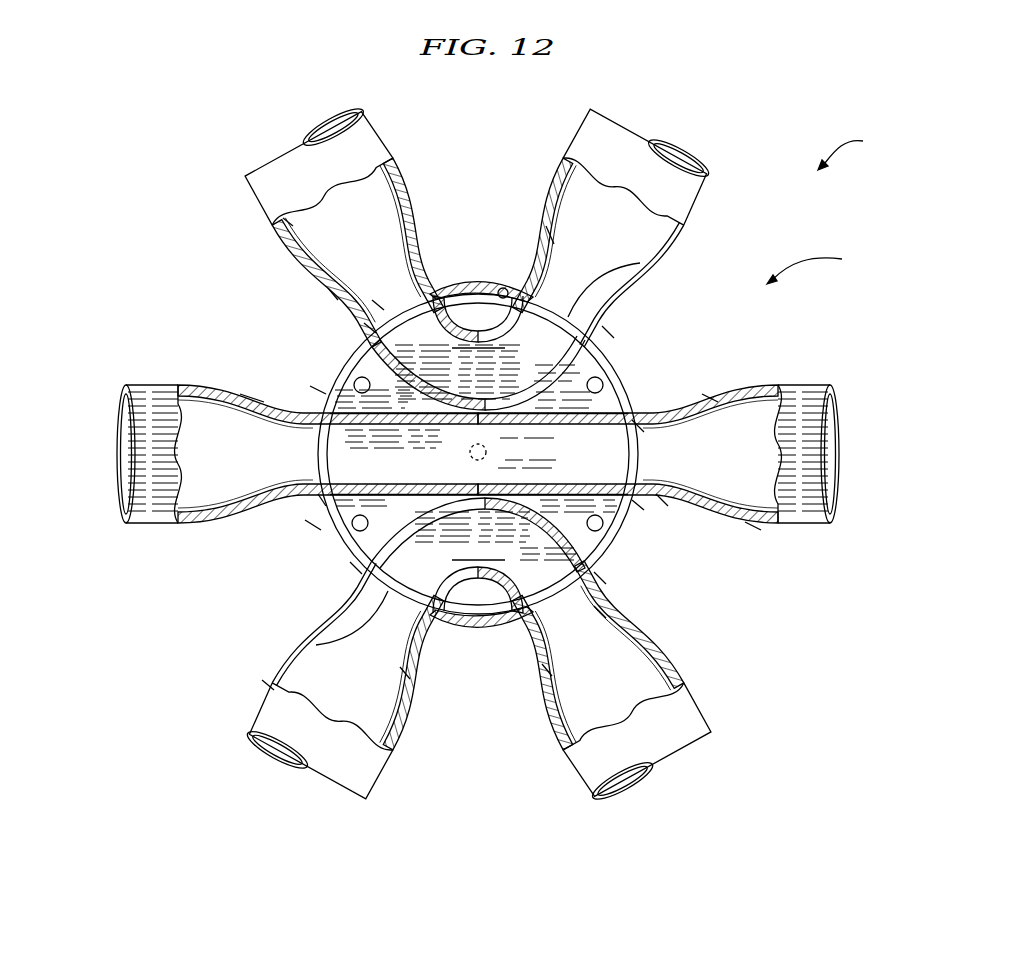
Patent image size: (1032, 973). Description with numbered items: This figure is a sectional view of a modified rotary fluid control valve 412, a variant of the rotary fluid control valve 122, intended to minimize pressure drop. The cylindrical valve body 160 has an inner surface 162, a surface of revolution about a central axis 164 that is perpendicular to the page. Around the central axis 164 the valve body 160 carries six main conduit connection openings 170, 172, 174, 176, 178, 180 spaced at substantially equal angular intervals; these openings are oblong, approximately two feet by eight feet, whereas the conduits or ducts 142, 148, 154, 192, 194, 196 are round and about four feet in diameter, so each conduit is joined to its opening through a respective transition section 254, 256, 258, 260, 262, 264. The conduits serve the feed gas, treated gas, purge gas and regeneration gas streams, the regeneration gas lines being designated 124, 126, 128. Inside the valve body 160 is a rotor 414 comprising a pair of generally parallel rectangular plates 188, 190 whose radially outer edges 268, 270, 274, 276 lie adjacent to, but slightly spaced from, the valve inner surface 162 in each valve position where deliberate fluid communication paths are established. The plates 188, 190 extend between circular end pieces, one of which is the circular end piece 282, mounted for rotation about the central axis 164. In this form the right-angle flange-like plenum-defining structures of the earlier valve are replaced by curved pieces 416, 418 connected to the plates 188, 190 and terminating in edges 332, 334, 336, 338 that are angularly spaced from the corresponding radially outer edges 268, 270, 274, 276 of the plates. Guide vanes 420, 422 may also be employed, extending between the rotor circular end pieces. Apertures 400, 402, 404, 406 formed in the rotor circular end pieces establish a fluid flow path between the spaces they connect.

The rotary fluid control valve 122 is at (828, 266).
The regeneration gas conduit 124 is at (335, 688).
The regeneration gas conduit 126 is at (349, 218).
The regeneration gas conduit 128 is at (702, 454).
The conduit 142 is at (190, 520).
The conduit 148 is at (698, 208).
The conduit 154 is at (693, 695).
The valve body 160 is at (450, 282).
The inner surface 162 is at (501, 289).
The central axis 164 is at (486, 448).
The main conduit connection opening 170 is at (378, 305).
The main conduit connection opening 172 is at (322, 500).
The main conduit connection opening 174 is at (356, 568).
The main conduit connection opening 176 is at (600, 578).
The main conduit connection opening 178 is at (662, 500).
The main conduit connection opening 180 is at (608, 332).
The parallel plate 188 is at (530, 422).
The parallel plate 190 is at (415, 487).
The conduit 192 is at (268, 685).
The conduit 194 is at (288, 222).
The conduit 196 is at (753, 527).
The transition section 254 is at (333, 294).
The transition section 256 is at (252, 398).
The transition section 258 is at (405, 673).
The transition section 260 is at (547, 670).
The transition section 262 is at (710, 398).
The transition section 264 is at (550, 235).
The radially outer edge 268 is at (318, 390).
The radially outer edge 270 is at (638, 426).
The radially outer edge 274 is at (638, 505).
The radially outer edge 276 is at (313, 526).
The circular end piece 282 is at (478, 319).
The edge 332 is at (370, 328).
The edge 334 is at (640, 270).
The edge 336 is at (600, 612).
The edge 338 is at (340, 603).
The aperture 400 is at (360, 377).
The aperture 402 is at (603, 384).
The aperture 404 is at (601, 531).
The aperture 406 is at (356, 527).
The valve 412 is at (863, 150).
The rotor 414 is at (478, 600).
The curved piece 416 is at (473, 400).
The curved piece 418 is at (447, 503).
The guide vane 420 is at (480, 348).
The guide vane 422 is at (460, 582).